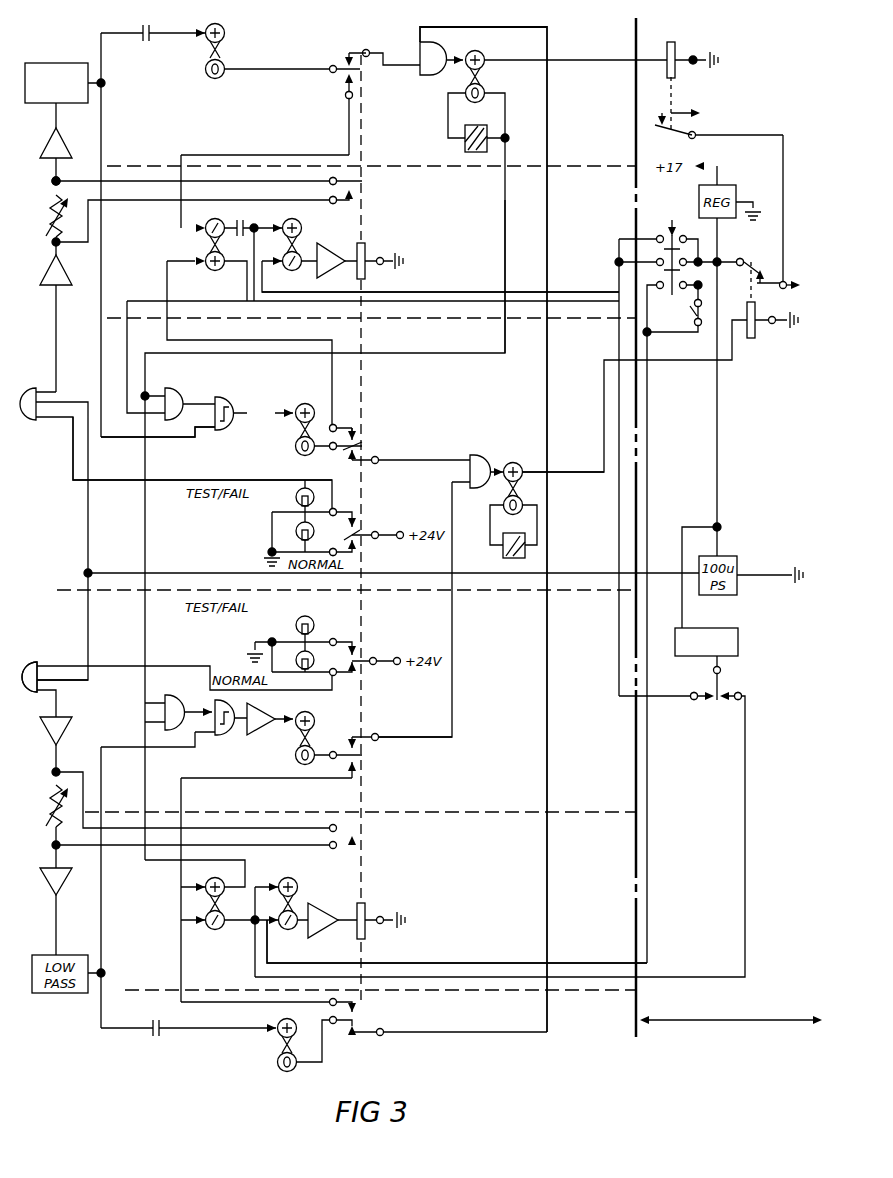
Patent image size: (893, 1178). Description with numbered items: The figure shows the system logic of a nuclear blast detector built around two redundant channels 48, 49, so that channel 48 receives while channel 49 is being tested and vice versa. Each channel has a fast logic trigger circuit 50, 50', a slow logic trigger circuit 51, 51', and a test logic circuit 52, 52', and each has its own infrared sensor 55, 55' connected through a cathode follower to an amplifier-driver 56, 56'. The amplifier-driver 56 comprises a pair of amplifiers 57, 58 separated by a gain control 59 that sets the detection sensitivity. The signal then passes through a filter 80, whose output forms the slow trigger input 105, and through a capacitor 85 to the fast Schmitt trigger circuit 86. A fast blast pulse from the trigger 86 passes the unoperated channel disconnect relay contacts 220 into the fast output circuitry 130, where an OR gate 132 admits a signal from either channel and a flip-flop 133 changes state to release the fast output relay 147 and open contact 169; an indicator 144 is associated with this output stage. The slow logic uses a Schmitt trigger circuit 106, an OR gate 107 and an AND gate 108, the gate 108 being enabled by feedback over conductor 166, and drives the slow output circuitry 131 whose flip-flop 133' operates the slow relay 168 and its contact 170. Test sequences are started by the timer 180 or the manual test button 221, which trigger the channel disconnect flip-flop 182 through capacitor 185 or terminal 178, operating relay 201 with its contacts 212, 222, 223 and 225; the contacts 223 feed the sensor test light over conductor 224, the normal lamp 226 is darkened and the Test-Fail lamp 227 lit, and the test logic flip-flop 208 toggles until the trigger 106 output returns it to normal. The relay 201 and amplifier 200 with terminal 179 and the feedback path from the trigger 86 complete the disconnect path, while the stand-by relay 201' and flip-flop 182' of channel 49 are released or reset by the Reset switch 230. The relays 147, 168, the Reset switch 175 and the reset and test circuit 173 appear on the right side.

The filter 80 is at (74, 60).
The capacitor 85 is at (148, 42).
The Schmitt trigger circuit 86 is at (225, 35).
The amplifier 58 is at (46, 140).
The amplifier-driver 56 is at (37, 172).
The gain control 59 is at (48, 209).
The amplifier 57 is at (46, 272).
The channel disconnect relay contacts 220 is at (343, 64).
The contacts of relay 201 212 is at (340, 76).
The contacts 222 is at (354, 184).
The OR gate 132 is at (440, 58).
The flip-flop 133 is at (498, 77).
The fast output circuitry 130 is at (438, 88).
The indicator 144 is at (465, 152).
The fast output relay 147 is at (676, 44).
The contact 169 is at (658, 118).
The contact 170 is at (764, 266).
The manual test button 221 is at (690, 312).
The Reset switch 230 is at (703, 328).
The slow output relay 168 is at (750, 338).
The test logic circuit flip-flop 208 is at (213, 222).
The capacitor 185 is at (242, 221).
The channel disconnect flip-flop circuit 182 is at (318, 244).
The relay 201 is at (385, 246).
The amplifier 200 is at (332, 276).
The conductor 166 is at (504, 247).
The output of differentiating circuit 178 is at (258, 296).
The infrared sensor 55 is at (29, 393).
The channel 48 is at (72, 536).
The channel 49 is at (66, 616).
The conductor 224 is at (138, 486).
The slow trigger input 105 is at (174, 438).
The OR gate 107 is at (190, 380).
The AND gate 108 is at (236, 386).
The Schmitt trigger circuit 106 is at (298, 404).
The channel disconnect relay contacts 225 is at (360, 442).
The slow logic output circuitry 131 is at (533, 452).
The flip-flop 133' is at (490, 511).
The Test-Fail lamp 227 is at (292, 488).
The system normal lamp 226 is at (296, 532).
The contacts 223 is at (360, 526).
The timer 180 is at (700, 626).
The Reset switch 175 is at (722, 712).
The infrared sensor 55' is at (26, 692).
The amplifier-driver 56' is at (42, 801).
The channel disconnect flip-flop 182' is at (314, 899).
The relay 201' is at (387, 908).
The terminal 179 is at (265, 968).
The reset and test circuit 173 is at (752, 1052).
The fast logic trigger circuit 50 is at (576, 89).
The test logic circuit 52 is at (576, 245).
The slow logic trigger circuit 51 is at (576, 454).
The slow logic trigger circuit 51' is at (576, 701).
The test logic circuit 52' is at (576, 901).
The fast logic trigger circuit 50' is at (576, 1035).